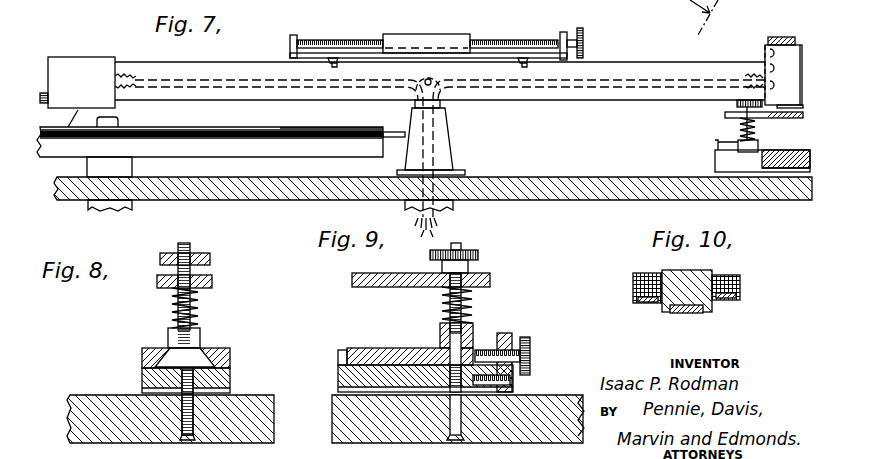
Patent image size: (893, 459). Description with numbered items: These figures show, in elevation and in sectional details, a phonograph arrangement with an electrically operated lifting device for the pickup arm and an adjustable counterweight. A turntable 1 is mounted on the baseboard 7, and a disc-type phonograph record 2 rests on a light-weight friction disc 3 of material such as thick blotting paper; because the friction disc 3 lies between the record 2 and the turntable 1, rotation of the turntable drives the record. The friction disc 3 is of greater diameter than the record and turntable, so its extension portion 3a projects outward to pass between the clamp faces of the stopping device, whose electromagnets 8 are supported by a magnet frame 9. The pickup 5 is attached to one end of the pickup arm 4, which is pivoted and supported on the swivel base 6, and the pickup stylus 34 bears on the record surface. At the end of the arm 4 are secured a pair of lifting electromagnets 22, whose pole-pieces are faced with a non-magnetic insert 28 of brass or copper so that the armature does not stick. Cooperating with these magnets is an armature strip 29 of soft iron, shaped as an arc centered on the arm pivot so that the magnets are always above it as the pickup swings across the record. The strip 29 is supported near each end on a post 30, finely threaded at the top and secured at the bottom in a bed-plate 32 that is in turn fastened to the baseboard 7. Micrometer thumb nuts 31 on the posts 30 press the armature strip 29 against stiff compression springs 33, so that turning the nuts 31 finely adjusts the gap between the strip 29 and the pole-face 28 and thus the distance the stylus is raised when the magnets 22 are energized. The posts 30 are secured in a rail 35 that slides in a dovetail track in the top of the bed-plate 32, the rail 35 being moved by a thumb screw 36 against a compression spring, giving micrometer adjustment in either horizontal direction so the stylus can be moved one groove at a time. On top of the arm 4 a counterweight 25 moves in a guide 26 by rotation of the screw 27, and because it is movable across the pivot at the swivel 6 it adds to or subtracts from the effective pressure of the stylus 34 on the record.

In FIG. 7, the turntable 1 is at (259, 151).
In FIG. 7, the phonograph record 2 is at (223, 127).
In FIG. 7, the friction disc 3 is at (313, 132).
In FIG. 7, the extension portion of the friction disc 3a is at (395, 133).
In FIG. 7, the pickup arm 4 is at (530, 100).
In FIG. 7, the pickup 5 is at (83, 63).
In FIG. 7, the swivel base 6 is at (447, 158).
In FIG. 7, the baseboard 7 is at (616, 176).
In FIG. 8, the baseboard 7 is at (260, 398).
In FIG. 9, the baseboard 7 is at (578, 398).
In FIG. 7, the electromagnets 8 is at (788, 3).
In FIG. 10, the electromagnets 8 is at (741, 282).
In FIG. 7, the magnet frame 9 is at (698, 17).
In FIG. 7, the lifting electromagnets 22 is at (767, 47).
In FIG. 7, the counterweight 25 is at (440, 37).
In FIG. 7, the guide 26 is at (361, 53).
In FIG. 7, the screw 27 is at (583, 32).
In FIG. 7, the non-magnetic insert 28 is at (785, 108).
In FIG. 10, the non-magnetic insert 28 is at (698, 313).
In FIG. 7, the armature strip 29 is at (785, 119).
In FIG. 8, the armature strip 29 is at (158, 284).
In FIG. 9, the armature strip 29 is at (491, 280).
In FIG. 7, the post 30 is at (745, 130).
In FIG. 8, the post 30 is at (186, 245).
In FIG. 9, the post 30 is at (460, 246).
In FIG. 7, the micrometer thumb nut 31 is at (737, 104).
In FIG. 8, the micrometer thumb nut 31 is at (211, 257).
In FIG. 9, the micrometer thumb nut 31 is at (479, 256).
In FIG. 7, the bed-plate 32 is at (730, 165).
In FIG. 8, the bed-plate 32 is at (142, 373).
In FIG. 9, the bed-plate 32 is at (340, 375).
In FIG. 7, the compression spring 33 is at (755, 132).
In FIG. 8, the compression spring 33 is at (172, 311).
In FIG. 9, the compression spring 33 is at (473, 311).
In FIG. 7, the pickup stylus 34 is at (76, 112).
In FIG. 7, the rail 35 is at (738, 147).
In FIG. 8, the rail 35 is at (203, 358).
In FIG. 9, the rail 35 is at (399, 348).
In FIG. 9, the thumb screw 36 is at (531, 353).